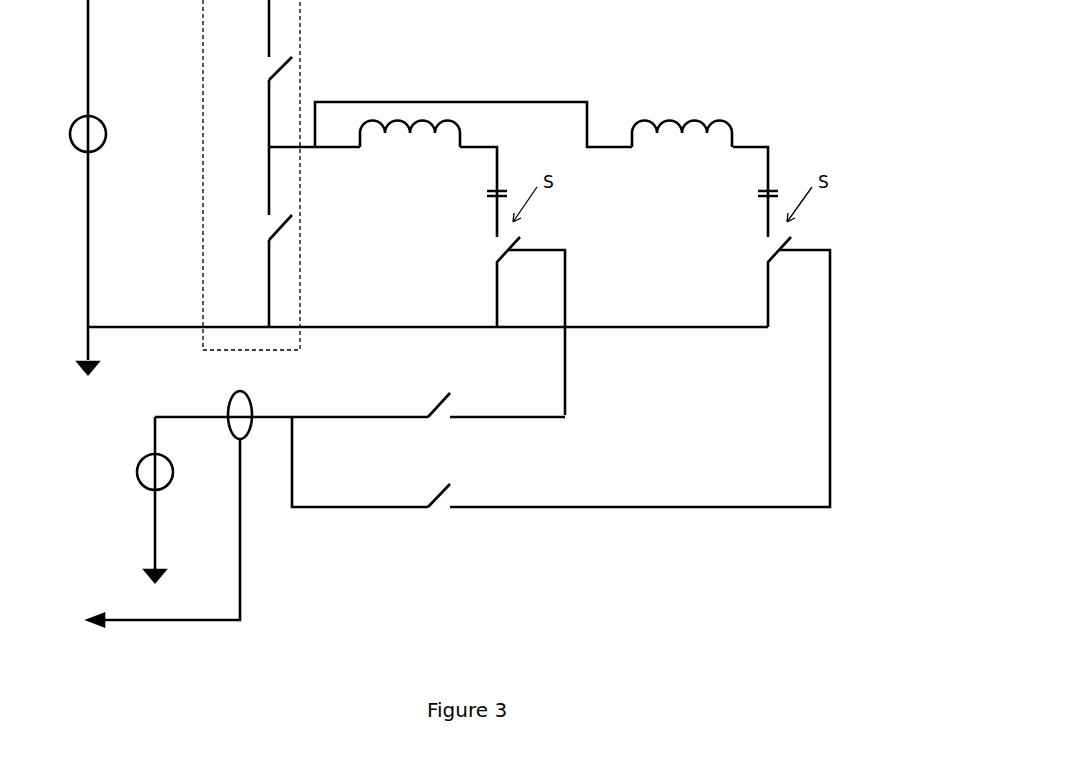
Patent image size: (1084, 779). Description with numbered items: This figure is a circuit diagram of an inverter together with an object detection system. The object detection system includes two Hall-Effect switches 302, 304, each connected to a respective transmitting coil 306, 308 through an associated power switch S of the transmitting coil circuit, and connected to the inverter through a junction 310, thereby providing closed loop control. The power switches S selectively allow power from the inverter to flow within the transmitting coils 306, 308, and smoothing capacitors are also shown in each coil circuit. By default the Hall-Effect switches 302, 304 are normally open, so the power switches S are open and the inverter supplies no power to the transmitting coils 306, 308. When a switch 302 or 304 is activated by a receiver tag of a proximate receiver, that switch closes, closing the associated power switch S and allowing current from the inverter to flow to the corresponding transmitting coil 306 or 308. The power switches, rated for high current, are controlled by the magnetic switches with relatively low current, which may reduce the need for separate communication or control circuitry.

The Hall-Effect switch 302 is at (440, 405).
The Hall-Effect switch 304 is at (438, 507).
The transmitting coil 306 is at (413, 114).
The transmitting coil 308 is at (703, 115).
The junction 310 is at (246, 425).